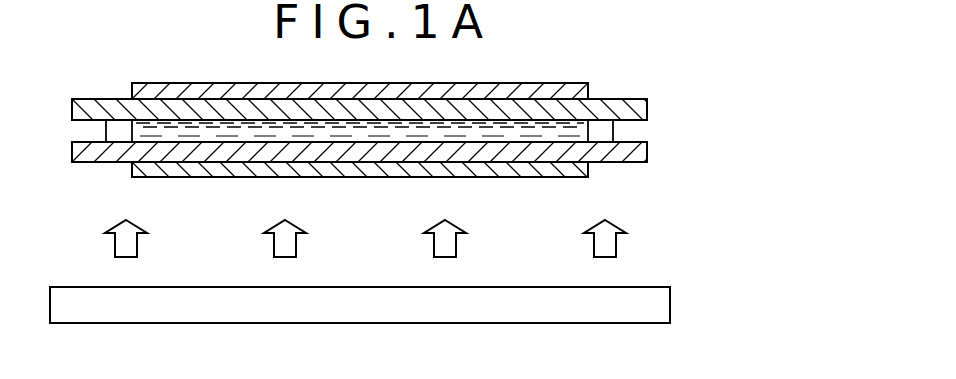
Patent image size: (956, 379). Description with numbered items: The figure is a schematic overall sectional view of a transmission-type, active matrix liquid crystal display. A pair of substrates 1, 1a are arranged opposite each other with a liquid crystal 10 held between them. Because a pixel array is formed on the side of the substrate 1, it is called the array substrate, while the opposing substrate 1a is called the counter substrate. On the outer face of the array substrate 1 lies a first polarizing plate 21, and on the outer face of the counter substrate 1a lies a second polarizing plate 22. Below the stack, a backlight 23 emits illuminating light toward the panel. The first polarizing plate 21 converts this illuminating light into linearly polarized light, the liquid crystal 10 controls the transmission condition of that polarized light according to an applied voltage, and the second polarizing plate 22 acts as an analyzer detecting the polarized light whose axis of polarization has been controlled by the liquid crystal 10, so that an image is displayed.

The substrate 1 is at (647, 151).
The counter substrate 1a is at (647, 107).
The liquid crystal 10 is at (588, 131).
The polarizing plate 21 is at (588, 170).
The polarizing plate 22 is at (588, 93).
The backlight 23 is at (670, 303).